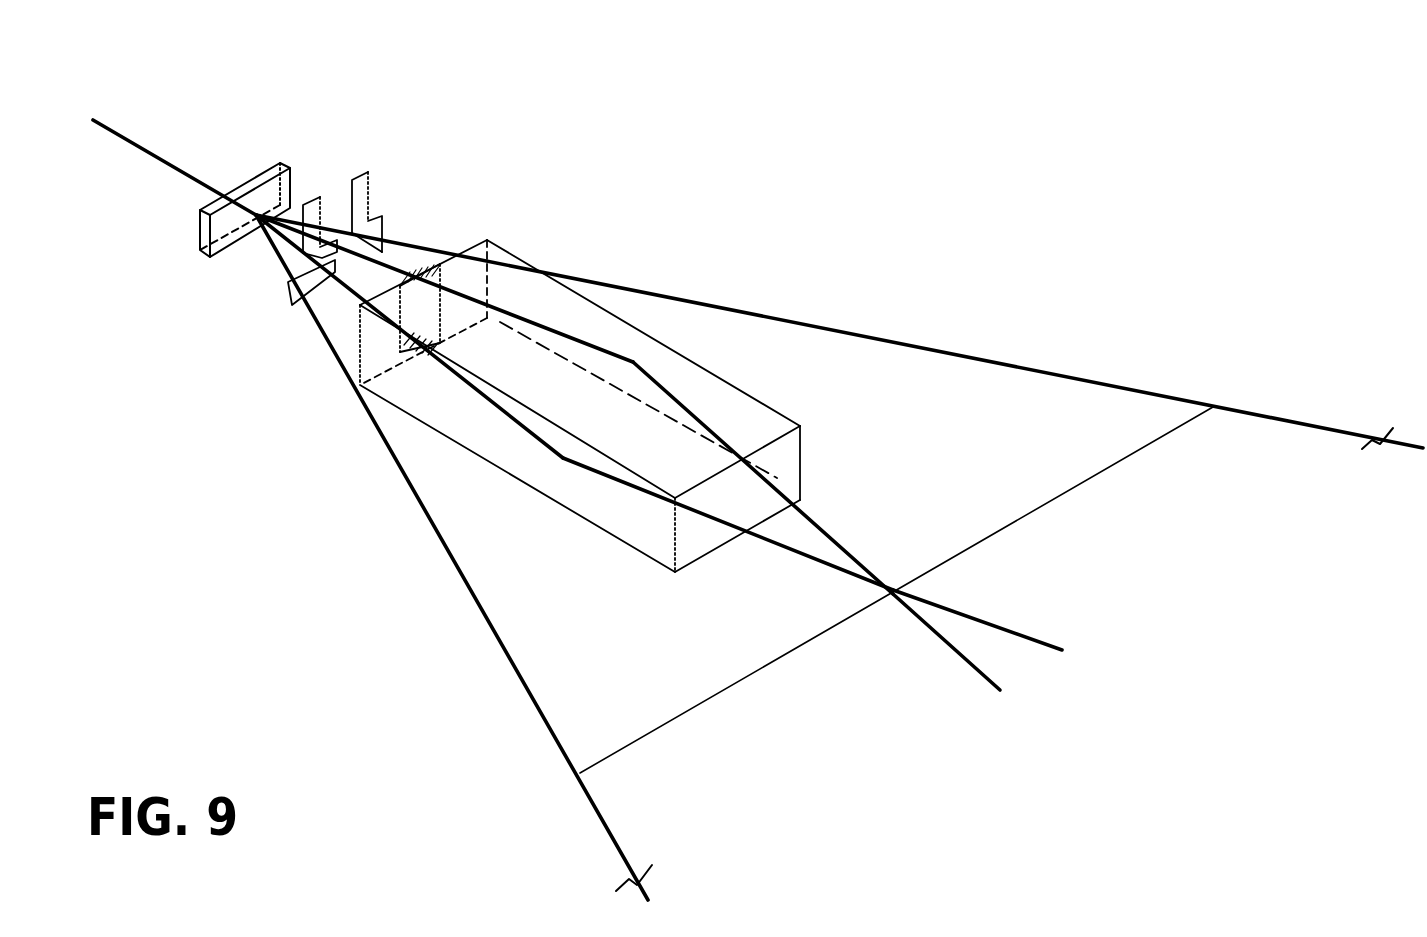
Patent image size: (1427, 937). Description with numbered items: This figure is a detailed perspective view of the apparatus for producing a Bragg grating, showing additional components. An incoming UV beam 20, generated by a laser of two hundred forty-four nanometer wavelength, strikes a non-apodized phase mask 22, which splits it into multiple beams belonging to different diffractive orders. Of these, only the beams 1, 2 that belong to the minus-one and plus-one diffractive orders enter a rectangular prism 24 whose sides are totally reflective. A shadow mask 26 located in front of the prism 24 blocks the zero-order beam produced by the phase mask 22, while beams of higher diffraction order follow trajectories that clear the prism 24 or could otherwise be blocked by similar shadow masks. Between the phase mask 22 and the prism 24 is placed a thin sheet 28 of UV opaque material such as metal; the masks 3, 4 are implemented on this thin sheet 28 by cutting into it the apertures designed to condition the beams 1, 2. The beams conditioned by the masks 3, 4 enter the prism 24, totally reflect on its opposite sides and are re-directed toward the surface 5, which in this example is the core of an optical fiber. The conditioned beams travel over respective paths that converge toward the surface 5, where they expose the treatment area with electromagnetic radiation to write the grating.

The beam 1 is at (360, 307).
The beam 2 is at (398, 258).
The mask 3 is at (300, 297).
The mask 4 is at (383, 233).
The surface 5 is at (893, 597).
The incoming UV beam 20 is at (158, 128).
The non-apodized phase mask 22 is at (200, 236).
The rectangular prism 24 is at (630, 342).
The shadow mask 26 is at (420, 318).
The thin sheet 28 is at (360, 173).